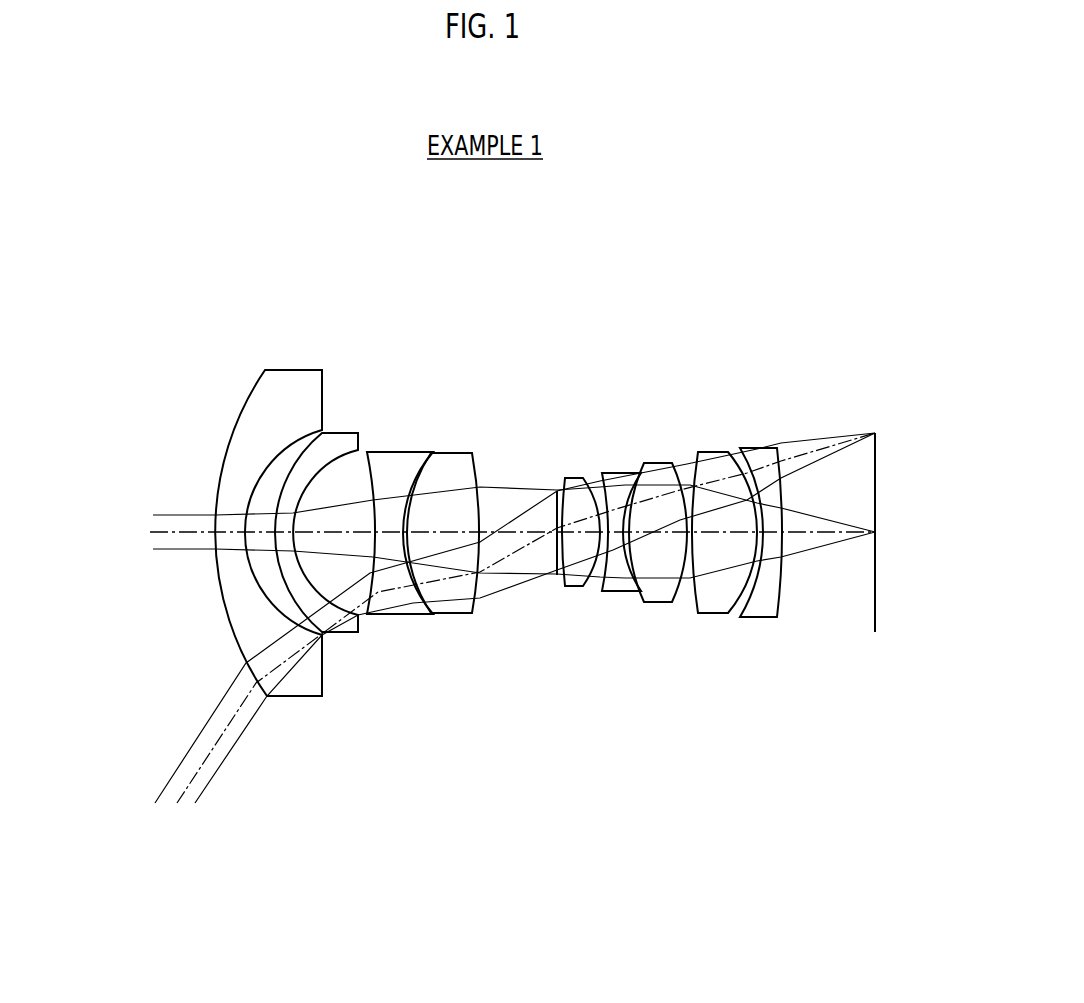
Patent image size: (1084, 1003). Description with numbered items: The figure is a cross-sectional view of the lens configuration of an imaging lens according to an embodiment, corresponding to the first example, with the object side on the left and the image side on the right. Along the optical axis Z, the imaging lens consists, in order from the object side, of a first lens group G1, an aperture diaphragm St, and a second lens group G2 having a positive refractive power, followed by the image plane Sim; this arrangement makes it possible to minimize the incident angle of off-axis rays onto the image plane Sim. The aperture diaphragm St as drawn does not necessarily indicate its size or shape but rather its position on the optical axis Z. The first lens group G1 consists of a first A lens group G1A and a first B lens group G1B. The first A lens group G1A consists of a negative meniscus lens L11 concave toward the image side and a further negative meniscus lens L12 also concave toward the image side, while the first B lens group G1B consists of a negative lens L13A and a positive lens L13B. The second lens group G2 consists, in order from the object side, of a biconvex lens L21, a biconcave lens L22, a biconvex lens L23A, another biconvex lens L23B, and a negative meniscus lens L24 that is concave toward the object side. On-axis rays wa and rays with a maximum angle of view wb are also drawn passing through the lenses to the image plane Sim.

The optical axis Z is at (177, 531).
The on-axis rays wa is at (150, 510).
The rays with a maximum angle of view wb is at (212, 808).
The first lens group G1 is at (432, 246).
The first A lens group G1A is at (352, 279).
The first B lens group G1B is at (457, 279).
The first-1 negative meniscus lens L11 is at (296, 381).
The first-2 negative meniscus lens L12 is at (342, 436).
The first-3A negative lens L13A is at (400, 456).
The first-3B positive lens L13B is at (452, 460).
The aperture diaphragm St is at (553, 577).
The second lens group G2 is at (743, 311).
The second-1 biconvex lens L21 is at (575, 477).
The second-2 biconcave lens L22 is at (617, 470).
The second-3A biconvex lens L23A is at (658, 463).
The second-3B biconvex lens L23B is at (710, 456).
The second-4 negative meniscus lens L24 is at (755, 451).
The image plane Sim is at (877, 627).